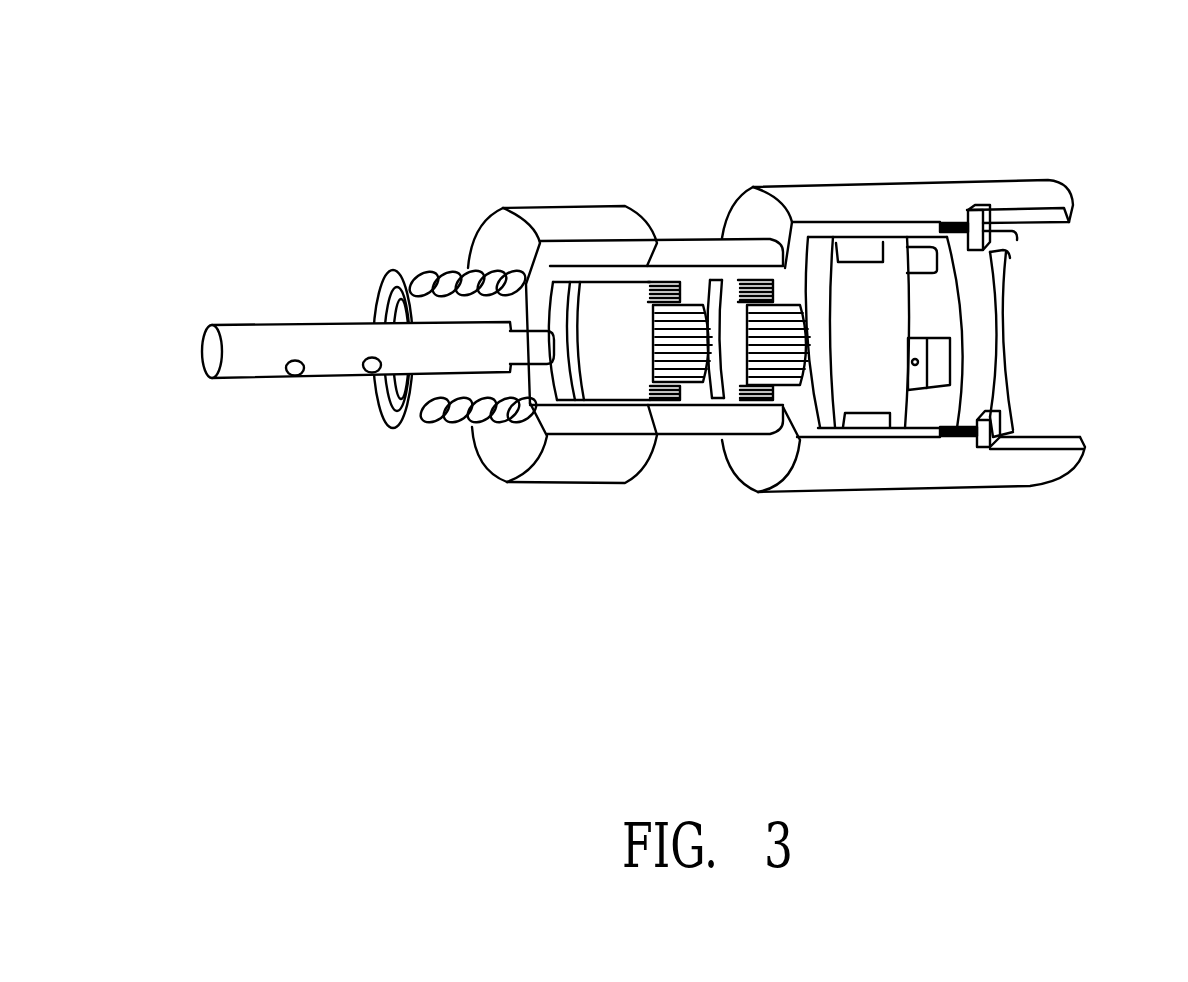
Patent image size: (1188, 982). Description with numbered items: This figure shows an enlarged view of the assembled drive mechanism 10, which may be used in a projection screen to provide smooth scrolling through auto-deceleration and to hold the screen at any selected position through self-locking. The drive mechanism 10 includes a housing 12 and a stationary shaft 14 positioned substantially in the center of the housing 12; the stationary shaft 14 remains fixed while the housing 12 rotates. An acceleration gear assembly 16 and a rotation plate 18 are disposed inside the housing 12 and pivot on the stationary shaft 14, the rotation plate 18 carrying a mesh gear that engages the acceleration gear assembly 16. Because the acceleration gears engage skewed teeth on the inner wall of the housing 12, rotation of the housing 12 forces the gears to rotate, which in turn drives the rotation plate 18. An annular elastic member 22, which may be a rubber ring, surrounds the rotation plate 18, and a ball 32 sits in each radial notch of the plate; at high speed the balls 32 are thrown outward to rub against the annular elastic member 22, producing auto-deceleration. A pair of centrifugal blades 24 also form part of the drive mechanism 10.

The drive mechanism 10 is at (197, 93).
The housing 12 is at (572, 462).
The stationary shaft 14 is at (347, 368).
The acceleration gear assembly 16 is at (672, 280).
The rotation plate 18 is at (875, 385).
The annular elastic member 22 is at (905, 425).
The centrifugal blades 24 is at (947, 353).
The ball 32 is at (855, 242).